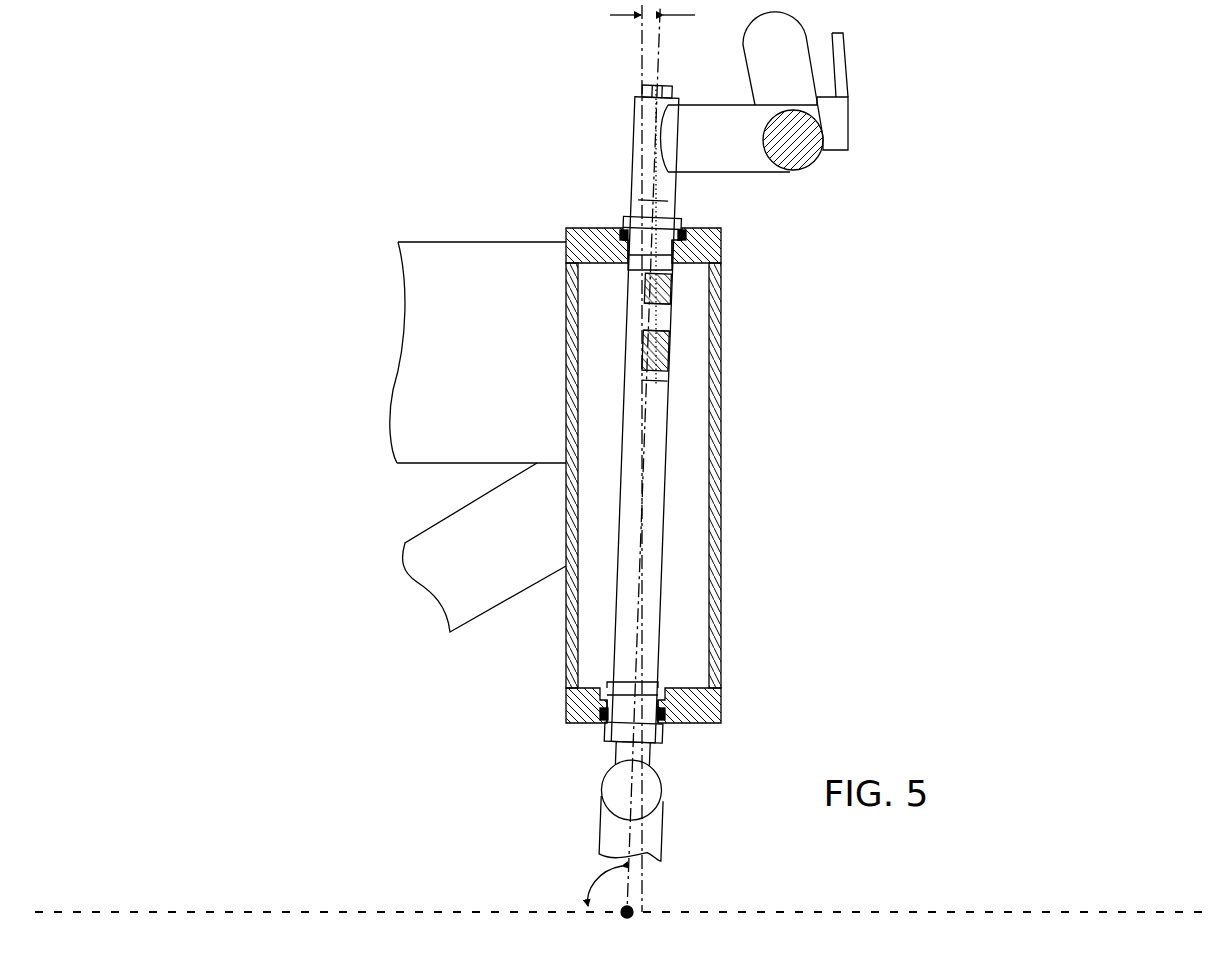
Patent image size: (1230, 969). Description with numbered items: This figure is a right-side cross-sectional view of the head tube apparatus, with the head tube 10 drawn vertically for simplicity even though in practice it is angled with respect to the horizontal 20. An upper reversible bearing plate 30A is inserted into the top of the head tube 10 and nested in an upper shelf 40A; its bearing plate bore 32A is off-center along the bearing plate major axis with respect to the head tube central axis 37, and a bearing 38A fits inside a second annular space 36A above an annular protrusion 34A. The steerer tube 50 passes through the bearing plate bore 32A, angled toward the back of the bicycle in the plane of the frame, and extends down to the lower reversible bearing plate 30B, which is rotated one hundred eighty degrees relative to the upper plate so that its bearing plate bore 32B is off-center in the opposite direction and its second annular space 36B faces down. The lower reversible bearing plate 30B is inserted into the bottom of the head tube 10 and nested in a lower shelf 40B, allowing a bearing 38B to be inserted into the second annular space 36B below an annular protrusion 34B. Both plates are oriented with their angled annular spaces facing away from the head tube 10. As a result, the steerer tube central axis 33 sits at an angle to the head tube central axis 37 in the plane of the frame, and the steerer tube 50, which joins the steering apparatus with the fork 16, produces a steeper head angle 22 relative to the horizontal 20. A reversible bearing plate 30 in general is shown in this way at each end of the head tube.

The head tube 10 is at (722, 545).
The fork 16 is at (660, 840).
The horizontal 20 is at (1122, 910).
The head angle 22 is at (610, 870).
The reversible bearing plate 30 is at (841, 92).
The upper reversible bearing plate 30A is at (585, 228).
The lower reversible bearing plate 30B is at (585, 725).
The bearing plate bore 32A is at (672, 263).
The bearing plate bore 32B is at (645, 688).
The steerer tube central axis 33 is at (666, 58).
The annular protrusion 34A is at (625, 265).
The annular protrusion 34B is at (605, 690).
The second annular space 36A is at (688, 238).
The second annular space 36B is at (665, 722).
The head tube central axis 37 is at (638, 68).
The bearing 38A is at (683, 222).
The bearing 38B is at (655, 745).
The upper shelf 40A is at (722, 248).
The lower shelf 40B is at (721, 700).
The steerer tube 50 is at (668, 490).